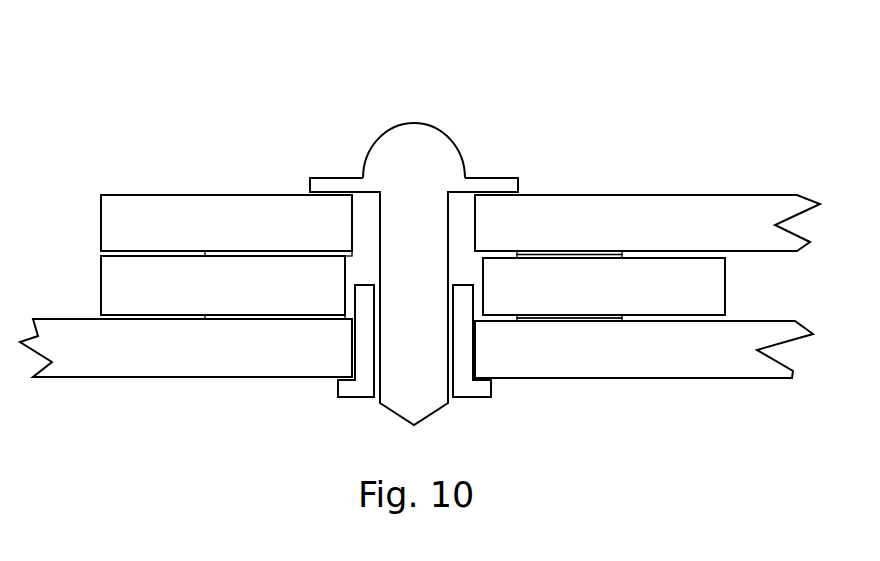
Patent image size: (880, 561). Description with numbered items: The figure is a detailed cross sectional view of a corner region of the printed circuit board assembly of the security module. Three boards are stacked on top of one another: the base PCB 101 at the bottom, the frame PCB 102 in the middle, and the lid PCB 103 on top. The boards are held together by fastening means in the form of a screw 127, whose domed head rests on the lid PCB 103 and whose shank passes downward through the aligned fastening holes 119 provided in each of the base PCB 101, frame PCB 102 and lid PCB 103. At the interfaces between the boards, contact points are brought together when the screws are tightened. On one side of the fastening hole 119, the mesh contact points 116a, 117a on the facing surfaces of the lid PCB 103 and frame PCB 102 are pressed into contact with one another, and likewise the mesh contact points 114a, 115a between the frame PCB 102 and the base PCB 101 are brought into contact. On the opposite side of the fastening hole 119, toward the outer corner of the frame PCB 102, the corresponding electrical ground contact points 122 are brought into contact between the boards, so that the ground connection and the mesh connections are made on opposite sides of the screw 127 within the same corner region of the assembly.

The screw 127 is at (417, 123).
The fastening hole 119 is at (363, 212).
The ground contact point 122 is at (252, 252).
The mesh contact point 116a is at (567, 252).
The mesh contact point 117a is at (569, 257).
The mesh contact point 114a is at (568, 322).
The mesh contact point 115a is at (569, 316).
The lid PCB 103 is at (712, 212).
The frame PCB 102 is at (717, 275).
The base PCB 101 is at (715, 378).